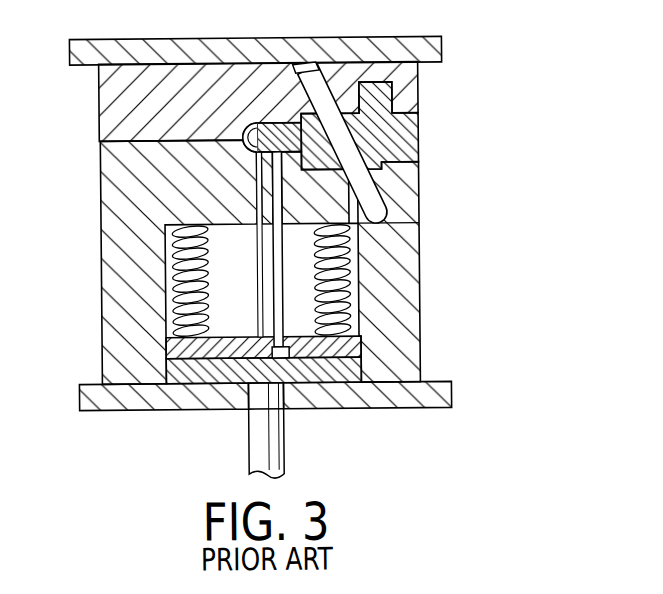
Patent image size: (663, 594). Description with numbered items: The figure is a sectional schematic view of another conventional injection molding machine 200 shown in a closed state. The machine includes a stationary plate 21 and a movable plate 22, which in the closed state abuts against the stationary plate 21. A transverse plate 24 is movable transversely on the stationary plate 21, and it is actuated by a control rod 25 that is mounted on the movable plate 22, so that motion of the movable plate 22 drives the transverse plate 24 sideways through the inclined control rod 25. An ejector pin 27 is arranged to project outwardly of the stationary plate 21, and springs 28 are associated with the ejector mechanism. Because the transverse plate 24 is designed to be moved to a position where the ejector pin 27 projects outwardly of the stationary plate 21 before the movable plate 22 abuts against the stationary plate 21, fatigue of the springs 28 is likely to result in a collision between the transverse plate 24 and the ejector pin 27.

The conventional injection molding machine 200 is at (292, 240).
The movable plate 22 is at (100, 92).
The stationary plate 21 is at (101, 158).
The transverse plate 24 is at (383, 152).
The control rod 25 is at (375, 198).
The ejector pin 27 is at (272, 180).
The springs 28 is at (170, 263).